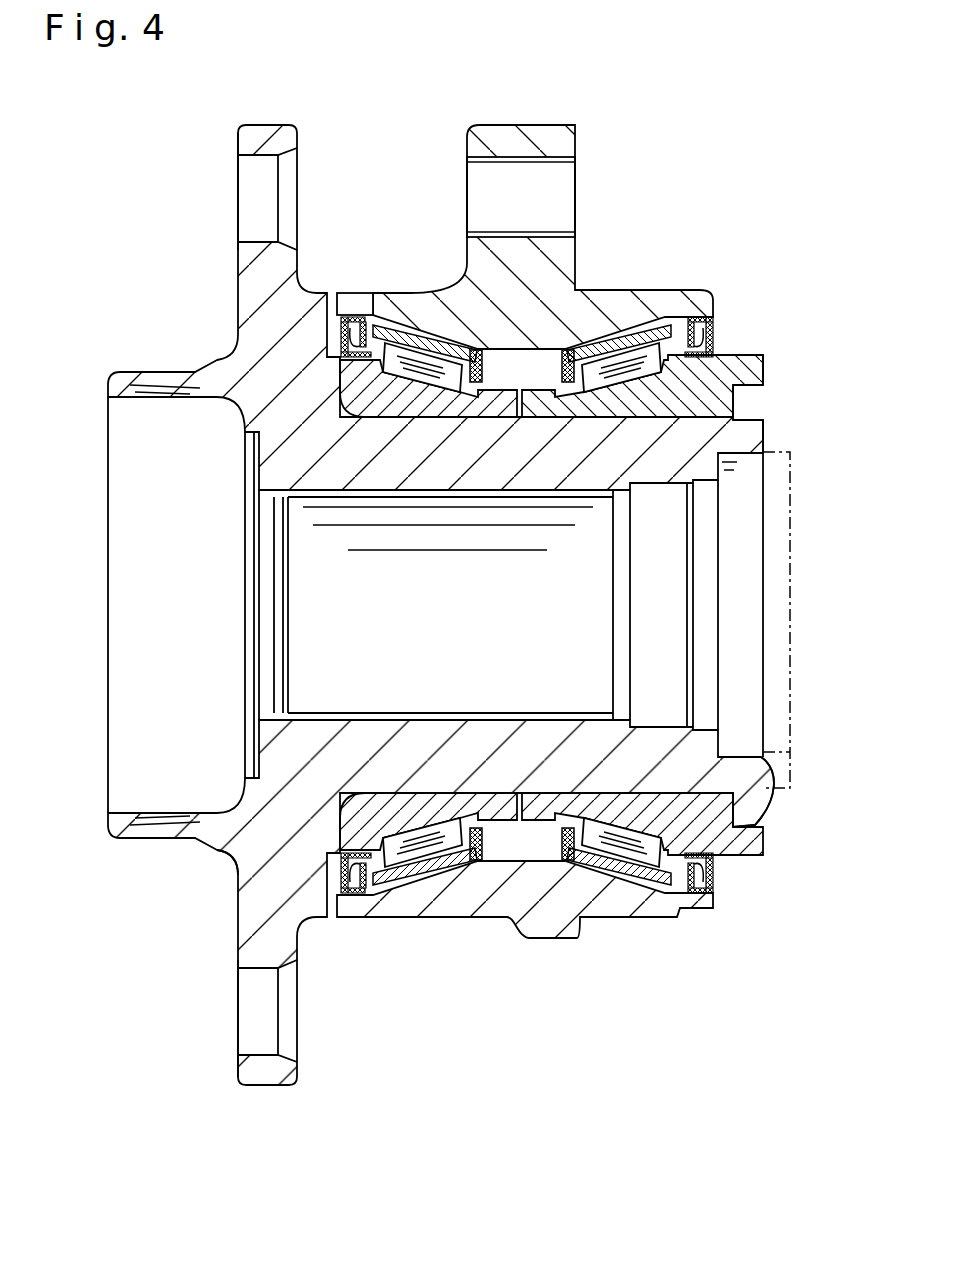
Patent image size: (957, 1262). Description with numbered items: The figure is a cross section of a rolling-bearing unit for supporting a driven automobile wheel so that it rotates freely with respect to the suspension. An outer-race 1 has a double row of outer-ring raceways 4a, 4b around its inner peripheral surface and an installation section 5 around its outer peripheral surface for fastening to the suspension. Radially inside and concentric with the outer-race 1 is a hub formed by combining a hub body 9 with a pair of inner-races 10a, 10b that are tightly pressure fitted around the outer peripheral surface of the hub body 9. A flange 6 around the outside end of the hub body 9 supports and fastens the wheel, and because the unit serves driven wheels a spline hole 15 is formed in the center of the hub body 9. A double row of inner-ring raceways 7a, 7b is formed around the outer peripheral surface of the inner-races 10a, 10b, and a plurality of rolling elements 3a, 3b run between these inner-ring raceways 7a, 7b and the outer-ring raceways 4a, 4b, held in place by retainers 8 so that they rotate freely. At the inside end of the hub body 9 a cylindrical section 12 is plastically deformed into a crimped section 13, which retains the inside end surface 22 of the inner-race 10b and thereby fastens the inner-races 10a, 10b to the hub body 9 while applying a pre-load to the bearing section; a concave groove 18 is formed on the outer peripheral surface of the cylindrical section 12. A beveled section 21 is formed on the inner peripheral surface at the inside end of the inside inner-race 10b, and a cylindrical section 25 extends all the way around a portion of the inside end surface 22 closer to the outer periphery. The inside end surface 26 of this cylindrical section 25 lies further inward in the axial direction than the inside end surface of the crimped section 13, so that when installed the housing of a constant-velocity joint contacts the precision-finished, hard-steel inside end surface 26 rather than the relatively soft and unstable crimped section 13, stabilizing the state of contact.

The outer-race 1 is at (452, 287).
The rolling element 3a is at (408, 380).
The rolling element 3b is at (640, 378).
The outer-ring raceway 4a is at (418, 327).
The outer-ring raceway 4b is at (615, 327).
The installation section 5 is at (570, 137).
The flange 6 is at (248, 143).
The inner-ring raceway 7a is at (438, 825).
The inner-ring raceway 7b is at (655, 890).
The retainer 8 is at (368, 313).
The hub body 9 is at (218, 377).
The inner-race 10a is at (450, 405).
The inner-race 10b is at (597, 387).
The cylindrical section 12 is at (742, 755).
The crimped section 13 is at (748, 420).
The spline hole 15 is at (240, 872).
The concave groove 18 is at (748, 805).
The beveled section 21 is at (740, 410).
The inside end surface 22 is at (757, 392).
The cylindrical section 25 is at (740, 355).
The inside end surface 26 is at (765, 363).